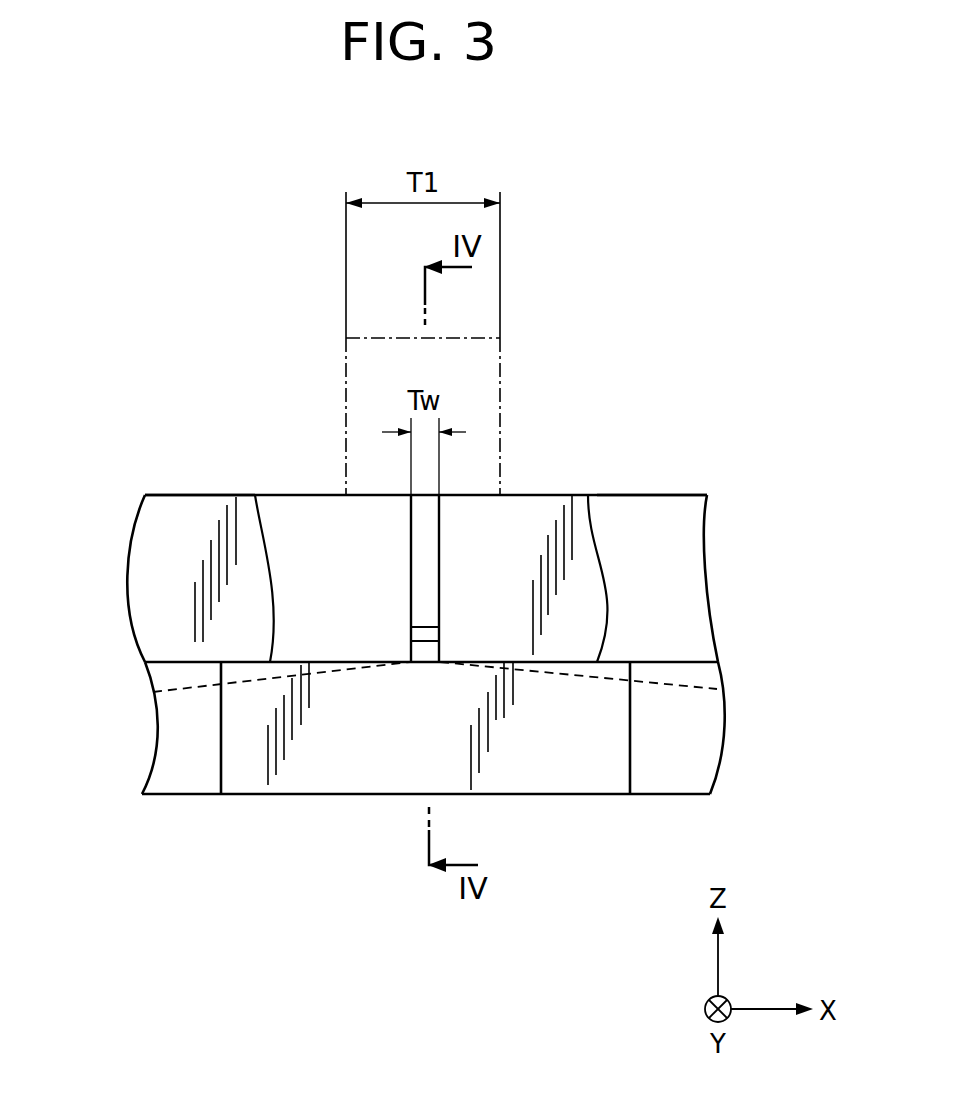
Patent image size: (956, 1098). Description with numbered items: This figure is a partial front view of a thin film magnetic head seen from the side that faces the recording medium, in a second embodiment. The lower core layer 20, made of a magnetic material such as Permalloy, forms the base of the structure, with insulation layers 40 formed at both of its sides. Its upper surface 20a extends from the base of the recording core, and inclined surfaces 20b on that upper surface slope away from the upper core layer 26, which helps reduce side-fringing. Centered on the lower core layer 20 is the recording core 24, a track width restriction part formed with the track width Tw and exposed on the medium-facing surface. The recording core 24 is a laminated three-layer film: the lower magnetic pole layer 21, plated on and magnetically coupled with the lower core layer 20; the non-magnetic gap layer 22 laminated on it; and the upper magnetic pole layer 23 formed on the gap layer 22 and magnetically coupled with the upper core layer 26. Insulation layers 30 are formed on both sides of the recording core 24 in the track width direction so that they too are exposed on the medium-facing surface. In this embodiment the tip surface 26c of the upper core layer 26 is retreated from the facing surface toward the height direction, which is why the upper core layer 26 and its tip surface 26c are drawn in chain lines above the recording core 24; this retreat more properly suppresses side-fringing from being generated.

The lower core layer 20 is at (555, 747).
The upper surface of the lower core layer 20a is at (255, 495).
The inclined surfaces 20b is at (185, 693).
The lower magnetic pole layer 21 is at (411, 648).
The gap layer 22 is at (411, 628).
The upper magnetic pole layer 23 is at (411, 538).
The recording core 24 is at (458, 496).
The upper core layer 26 is at (346, 372).
The tip surface of the upper core layer 26c is at (473, 352).
The insulation layers 30 is at (168, 542).
The insulation layers 40 is at (187, 770).